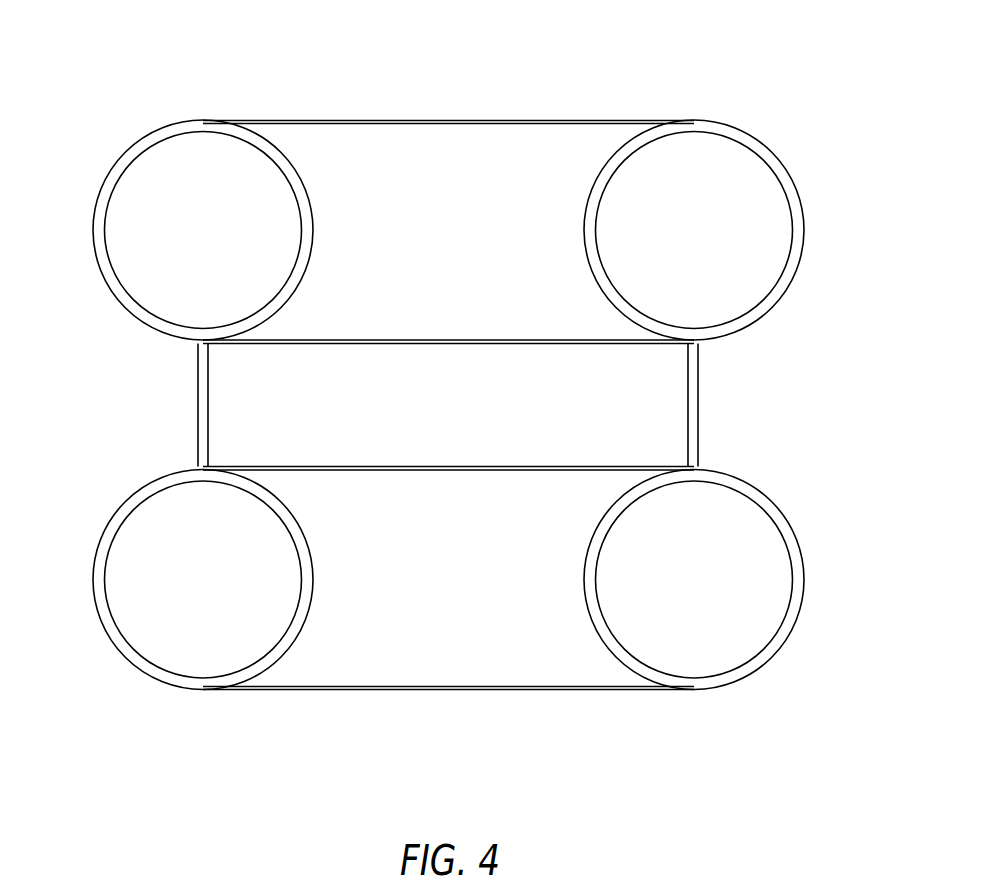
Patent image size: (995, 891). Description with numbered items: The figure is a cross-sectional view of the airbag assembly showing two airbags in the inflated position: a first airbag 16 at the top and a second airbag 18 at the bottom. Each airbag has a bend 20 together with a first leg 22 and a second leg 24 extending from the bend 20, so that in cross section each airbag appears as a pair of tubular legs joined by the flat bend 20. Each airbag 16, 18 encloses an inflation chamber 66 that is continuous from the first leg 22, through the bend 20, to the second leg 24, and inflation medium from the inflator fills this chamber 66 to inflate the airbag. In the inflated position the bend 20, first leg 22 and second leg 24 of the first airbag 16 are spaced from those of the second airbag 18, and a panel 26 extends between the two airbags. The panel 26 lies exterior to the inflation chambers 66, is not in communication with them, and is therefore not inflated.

The first airbag 16 is at (561, 104).
The second airbag 18 is at (561, 708).
The bend 20 is at (370, 120).
The first leg 22 is at (122, 160).
The second leg 24 is at (775, 160).
The panel 26 is at (700, 401).
The inflation chamber 66 is at (175, 221).